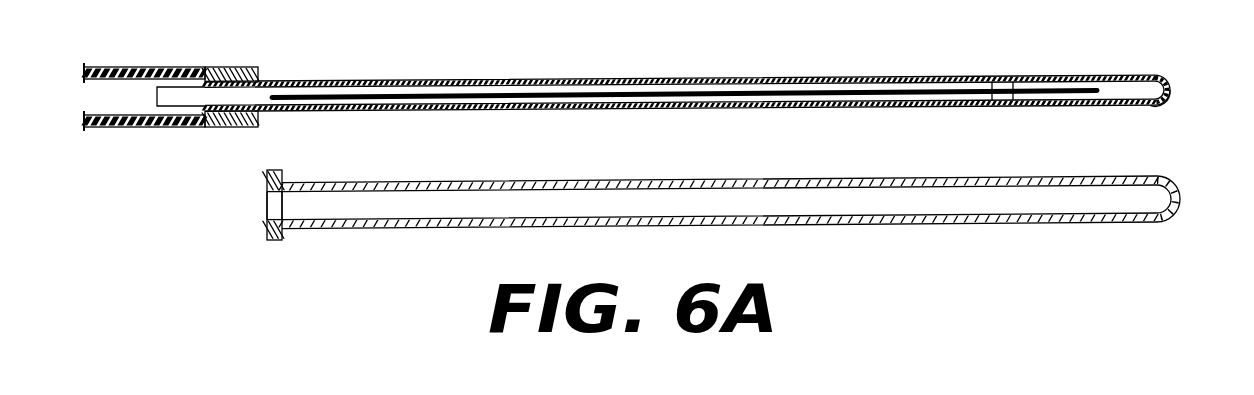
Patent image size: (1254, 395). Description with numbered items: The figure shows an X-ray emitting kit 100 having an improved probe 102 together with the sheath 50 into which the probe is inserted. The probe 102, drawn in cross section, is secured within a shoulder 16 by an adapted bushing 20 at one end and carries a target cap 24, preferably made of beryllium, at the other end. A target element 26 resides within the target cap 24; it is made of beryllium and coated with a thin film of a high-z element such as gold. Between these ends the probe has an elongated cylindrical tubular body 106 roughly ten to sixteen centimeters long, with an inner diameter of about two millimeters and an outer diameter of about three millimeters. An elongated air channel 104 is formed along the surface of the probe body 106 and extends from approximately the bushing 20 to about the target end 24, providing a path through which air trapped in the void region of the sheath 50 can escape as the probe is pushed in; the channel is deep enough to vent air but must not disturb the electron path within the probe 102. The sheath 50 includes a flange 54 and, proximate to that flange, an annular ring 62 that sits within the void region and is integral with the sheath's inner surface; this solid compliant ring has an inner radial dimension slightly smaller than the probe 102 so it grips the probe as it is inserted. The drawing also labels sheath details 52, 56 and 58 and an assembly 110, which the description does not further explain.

The shoulder 16 is at (139, 67).
The adapted bushing 20 is at (260, 70).
The target cap 24 is at (1125, 75).
The target element 26 is at (1153, 104).
The sheath 50 is at (570, 168).
The sleeve wall 52 is at (820, 223).
The flange 54 is at (276, 241).
The opening 56 is at (255, 203).
The closed distal end 58 is at (1181, 201).
The annular ring 62 is at (266, 215).
The X-ray emitting kit 100 is at (419, 23).
The probe 102 is at (623, 60).
The air channel 104 is at (940, 95).
The tubular body 106 is at (815, 77).
The sleeve assembly 110 is at (428, 392).